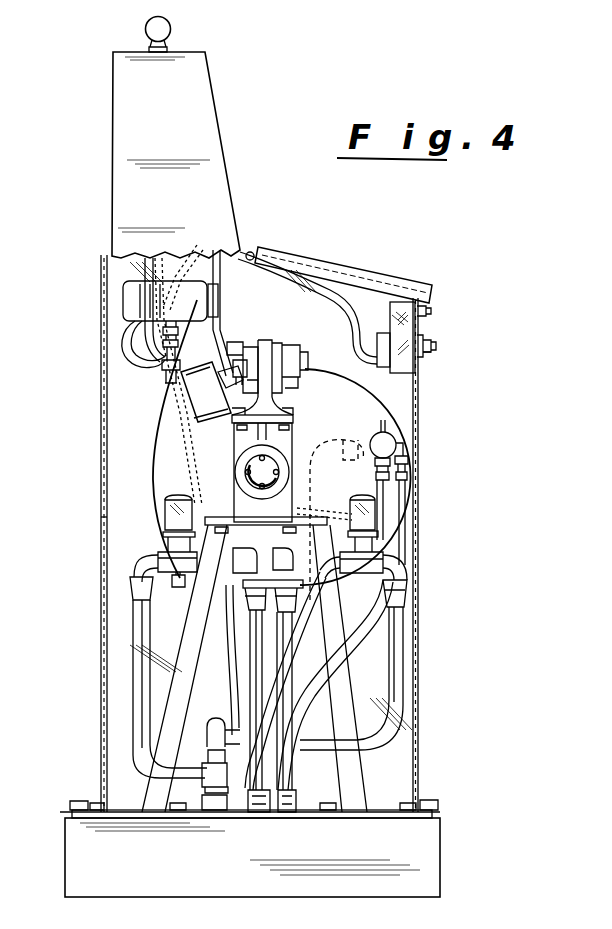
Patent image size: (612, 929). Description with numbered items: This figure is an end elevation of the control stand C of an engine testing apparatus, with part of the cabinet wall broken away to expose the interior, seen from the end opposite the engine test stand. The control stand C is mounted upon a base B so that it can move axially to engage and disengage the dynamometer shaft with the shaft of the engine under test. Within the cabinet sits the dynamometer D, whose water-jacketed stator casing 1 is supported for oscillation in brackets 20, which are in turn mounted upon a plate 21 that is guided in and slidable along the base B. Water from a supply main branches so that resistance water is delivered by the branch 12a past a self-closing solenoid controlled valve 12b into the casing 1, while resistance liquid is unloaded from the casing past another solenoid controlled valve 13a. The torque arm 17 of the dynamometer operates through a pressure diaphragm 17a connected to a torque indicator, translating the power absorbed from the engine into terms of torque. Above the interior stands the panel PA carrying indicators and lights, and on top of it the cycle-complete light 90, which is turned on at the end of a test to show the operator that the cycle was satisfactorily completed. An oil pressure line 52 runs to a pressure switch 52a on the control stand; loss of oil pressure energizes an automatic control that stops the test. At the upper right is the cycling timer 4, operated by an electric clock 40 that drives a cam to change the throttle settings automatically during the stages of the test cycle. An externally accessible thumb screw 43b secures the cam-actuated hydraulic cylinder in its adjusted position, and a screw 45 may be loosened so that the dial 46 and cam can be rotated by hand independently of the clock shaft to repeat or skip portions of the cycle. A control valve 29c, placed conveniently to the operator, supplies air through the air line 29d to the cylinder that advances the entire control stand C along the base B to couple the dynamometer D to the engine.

The cycle-complete light 90 is at (168, 22).
The panel PA is at (219, 126).
The pressure switch 52a is at (126, 300).
The oil pressure line 52 is at (232, 694).
The stator casing 1 is at (158, 463).
The dynamometer D is at (327, 419).
The pressure diaphragm 17a is at (266, 348).
The torque arm 17 is at (300, 355).
The cycling timer 4 is at (397, 309).
The electric clock 40 is at (384, 367).
The thumb screw 43b is at (429, 311).
The screw 45 is at (437, 347).
The dial 46 is at (432, 356).
The control valve 29c is at (390, 443).
The solenoid controlled valve 13a is at (163, 548).
The solenoid controlled valve 12b is at (375, 556).
The brackets 20 is at (195, 632).
The air line 29d is at (312, 707).
The branch 12a is at (395, 676).
The base B is at (186, 878).
The plate 21 is at (290, 813).
The control stand C is at (82, 520).